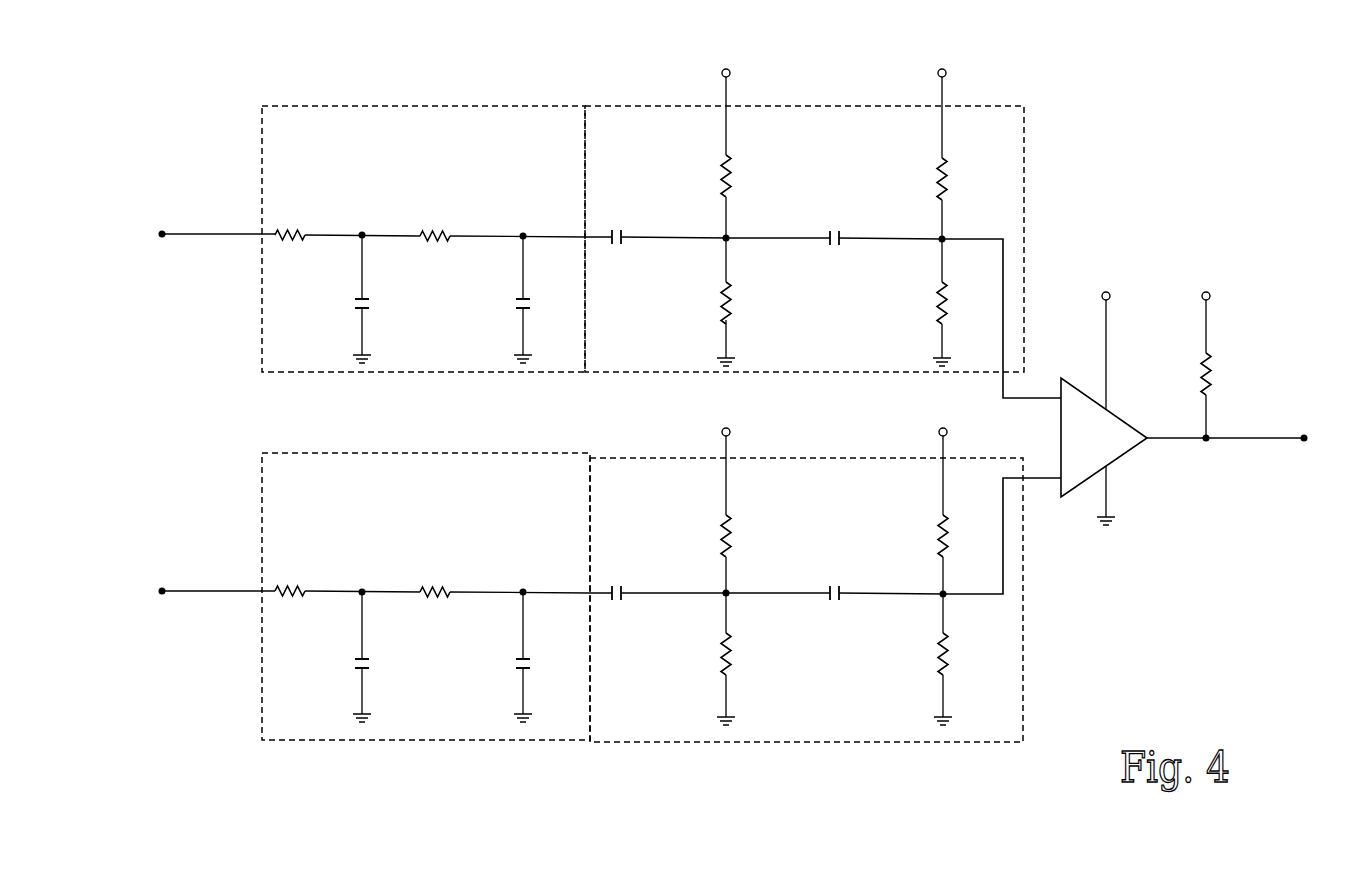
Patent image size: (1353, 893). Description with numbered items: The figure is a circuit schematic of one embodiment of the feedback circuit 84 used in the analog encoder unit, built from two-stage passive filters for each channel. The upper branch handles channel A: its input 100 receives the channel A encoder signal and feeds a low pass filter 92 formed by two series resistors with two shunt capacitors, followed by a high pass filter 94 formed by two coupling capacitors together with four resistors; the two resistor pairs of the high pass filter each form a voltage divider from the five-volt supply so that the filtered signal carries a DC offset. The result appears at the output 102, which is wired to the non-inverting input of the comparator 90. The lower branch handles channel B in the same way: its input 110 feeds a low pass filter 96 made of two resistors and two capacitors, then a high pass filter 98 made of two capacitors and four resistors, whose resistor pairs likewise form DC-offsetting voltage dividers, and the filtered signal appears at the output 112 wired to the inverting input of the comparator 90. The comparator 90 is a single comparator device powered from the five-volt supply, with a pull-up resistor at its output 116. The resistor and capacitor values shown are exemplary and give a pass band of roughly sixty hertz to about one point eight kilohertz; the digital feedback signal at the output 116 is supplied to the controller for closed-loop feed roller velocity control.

The feedback circuit 84 is at (1096, 168).
The comparator 90 is at (1172, 473).
The low pass filter 92 is at (407, 106).
The high pass filter 94 is at (800, 108).
The low pass filter 96 is at (393, 740).
The high pass filter 98 is at (726, 742).
The input 100 is at (163, 237).
The output 102 is at (1012, 379).
The input 110 is at (160, 594).
The output 112 is at (1025, 477).
The output 116 is at (1304, 432).